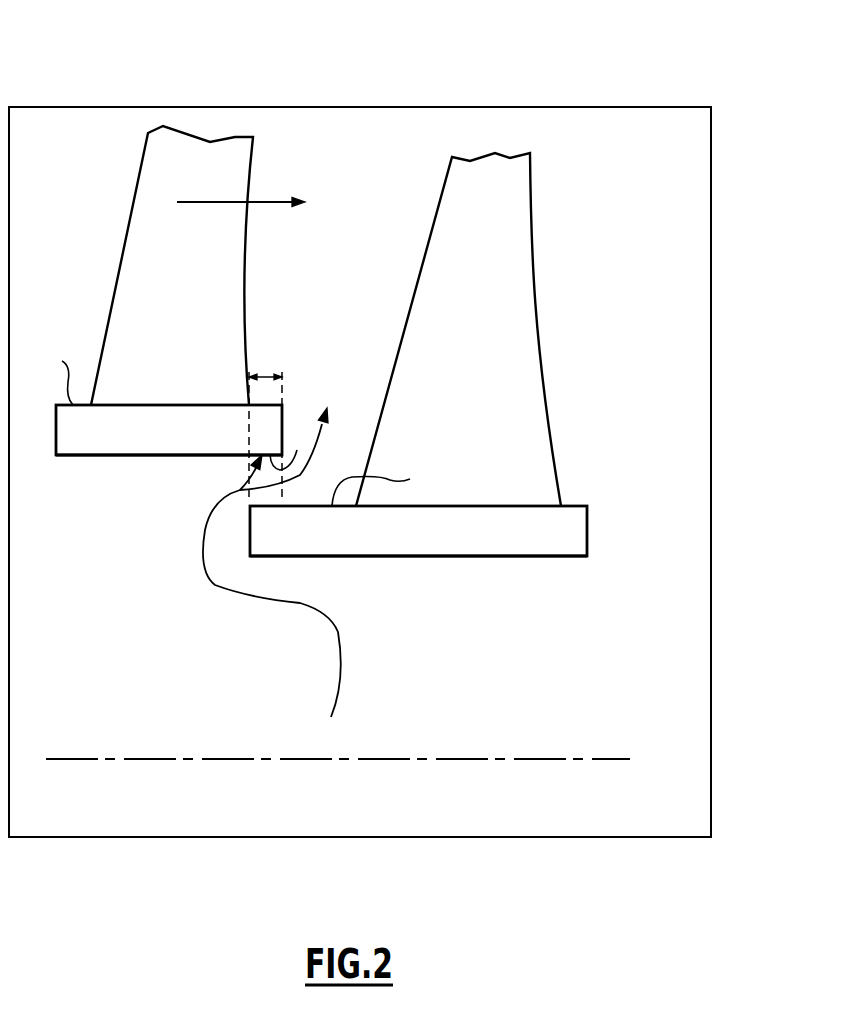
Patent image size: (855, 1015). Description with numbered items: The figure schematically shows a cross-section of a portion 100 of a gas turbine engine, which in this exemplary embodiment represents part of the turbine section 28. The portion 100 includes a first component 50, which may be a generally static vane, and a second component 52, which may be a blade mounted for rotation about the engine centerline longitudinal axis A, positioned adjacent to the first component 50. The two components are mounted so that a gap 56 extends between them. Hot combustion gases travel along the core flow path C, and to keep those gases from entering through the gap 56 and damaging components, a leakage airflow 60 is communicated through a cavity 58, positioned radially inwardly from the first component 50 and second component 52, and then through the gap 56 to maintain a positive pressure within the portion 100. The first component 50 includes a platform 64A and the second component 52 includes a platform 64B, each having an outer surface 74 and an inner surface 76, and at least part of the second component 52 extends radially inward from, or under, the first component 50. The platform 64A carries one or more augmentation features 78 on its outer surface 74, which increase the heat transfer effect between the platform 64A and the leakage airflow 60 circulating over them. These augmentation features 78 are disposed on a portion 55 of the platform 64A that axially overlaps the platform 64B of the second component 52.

The turbine section 28 is at (136, 86).
The portion 100 is at (495, 97).
The first component 50 is at (103, 262).
The second component 52 is at (573, 322).
The portion 55 is at (268, 372).
The gap 56 is at (345, 412).
The cavity 58 is at (263, 688).
The leakage airflow 60 is at (340, 632).
The platform 64A is at (72, 430).
The platform 64B is at (525, 542).
The outer surface 74 is at (117, 455).
The inner surface 76 is at (237, 428).
The augmentation features 78 is at (297, 450).
The core flow path C is at (245, 202).
The engine centerline longitudinal axis A is at (413, 759).